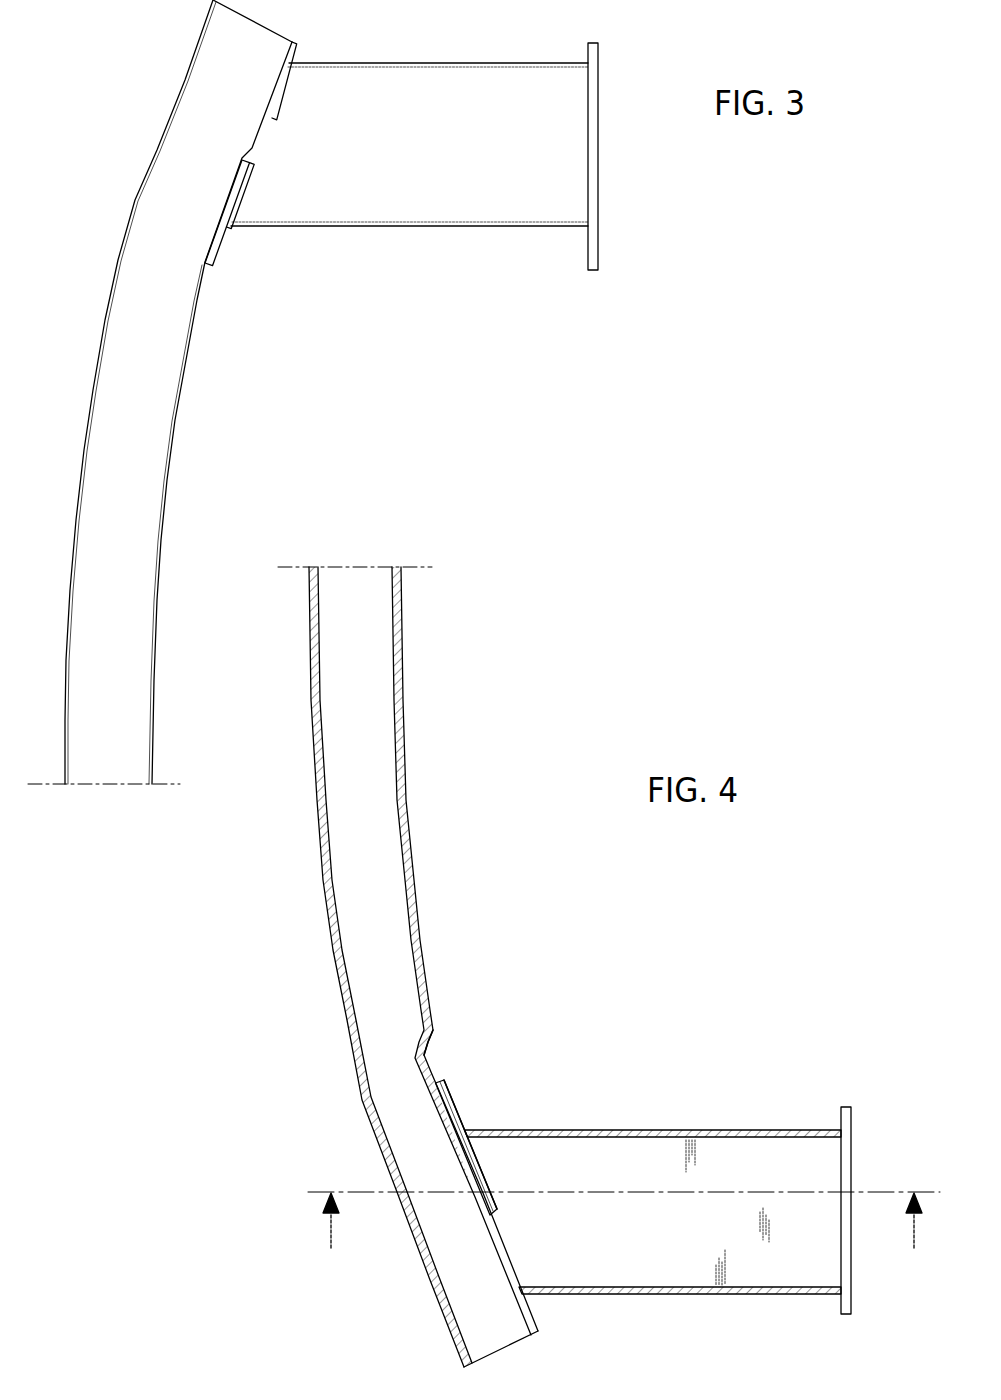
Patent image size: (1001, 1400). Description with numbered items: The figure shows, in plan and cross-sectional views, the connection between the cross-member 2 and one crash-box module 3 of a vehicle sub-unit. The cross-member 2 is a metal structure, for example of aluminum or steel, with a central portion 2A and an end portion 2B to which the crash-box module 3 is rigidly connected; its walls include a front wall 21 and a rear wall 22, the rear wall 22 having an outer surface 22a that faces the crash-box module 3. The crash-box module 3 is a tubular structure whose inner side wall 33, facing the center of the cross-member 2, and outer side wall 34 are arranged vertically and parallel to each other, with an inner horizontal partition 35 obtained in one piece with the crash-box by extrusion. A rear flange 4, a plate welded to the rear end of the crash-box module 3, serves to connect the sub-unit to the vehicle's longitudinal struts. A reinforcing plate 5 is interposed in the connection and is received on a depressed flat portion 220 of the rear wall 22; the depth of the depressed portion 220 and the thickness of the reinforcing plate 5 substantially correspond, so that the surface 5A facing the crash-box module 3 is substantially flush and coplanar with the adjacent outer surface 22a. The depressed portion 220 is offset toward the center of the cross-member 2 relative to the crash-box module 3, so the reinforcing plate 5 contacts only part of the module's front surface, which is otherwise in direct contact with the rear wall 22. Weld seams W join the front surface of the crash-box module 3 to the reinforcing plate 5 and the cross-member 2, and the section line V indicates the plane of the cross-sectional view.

In FIG. 3, the cross-member 2 is at (157, 392).
In FIG. 3, the central portion 2A is at (140, 648).
In FIG. 4, the central portion 2A is at (402, 967).
In FIG. 4, the end portion 2B is at (426, 1270).
In FIG. 3, the crash-box module 3 is at (492, 63).
In FIG. 4, the crash-box module 3 is at (653, 1212).
In FIG. 3, the rear flange 4 is at (600, 258).
In FIG. 4, the rear flange 4 is at (852, 1158).
In FIG. 3, the reinforcing plate 5 is at (221, 248).
In FIG. 4, the reinforcing plate 5 is at (496, 1111).
In FIG. 4, the surface of the reinforcing plate 5A is at (453, 1090).
In FIG. 3, the weld seam W is at (284, 84).
In FIG. 4, the front wall 21 is at (398, 967).
In FIG. 4, the rear wall 22 is at (465, 951).
In FIG. 4, the outer surface of the rear wall 22a is at (419, 929).
In FIG. 4, the depressed flat portion 220 is at (430, 1053).
In FIG. 4, the inner side wall 33 is at (765, 1131).
In FIG. 4, the outer side wall 34 is at (777, 1296).
In FIG. 4, the inner horizontal partition 35 is at (632, 1148).
In FIG. 4, the section line V- V is at (622, 1223).